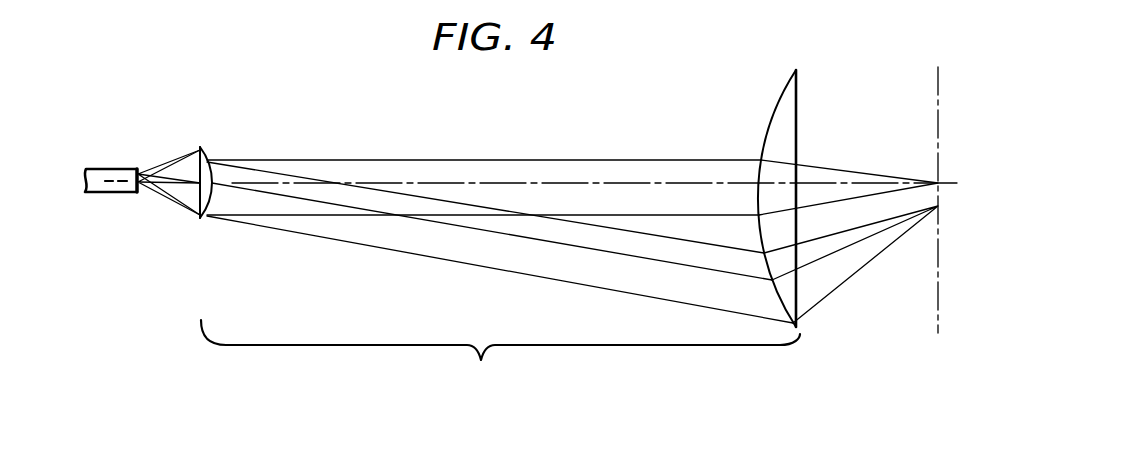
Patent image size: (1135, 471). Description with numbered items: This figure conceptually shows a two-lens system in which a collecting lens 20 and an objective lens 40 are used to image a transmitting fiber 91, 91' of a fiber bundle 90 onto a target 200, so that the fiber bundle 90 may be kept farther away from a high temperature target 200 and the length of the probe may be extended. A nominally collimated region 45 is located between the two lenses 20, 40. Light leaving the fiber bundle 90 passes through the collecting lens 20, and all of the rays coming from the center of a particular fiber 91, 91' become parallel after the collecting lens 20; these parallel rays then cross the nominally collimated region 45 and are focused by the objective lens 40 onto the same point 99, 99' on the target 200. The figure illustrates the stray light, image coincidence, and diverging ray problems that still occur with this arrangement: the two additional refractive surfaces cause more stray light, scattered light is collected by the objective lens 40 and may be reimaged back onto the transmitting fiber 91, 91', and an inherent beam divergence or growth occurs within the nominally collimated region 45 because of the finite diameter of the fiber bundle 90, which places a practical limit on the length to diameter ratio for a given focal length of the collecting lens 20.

The fiber bundle 90 is at (117, 168).
The transmitting fiber 91 is at (169, 202).
The transmitting fiber 91' is at (170, 157).
The collecting lens 20 is at (213, 159).
The nominally collimated region 45 is at (500, 279).
The objective lens 40 is at (774, 118).
The focal point on target 99 is at (848, 165).
The focal point on target 99' is at (851, 267).
The target 200 is at (935, 87).